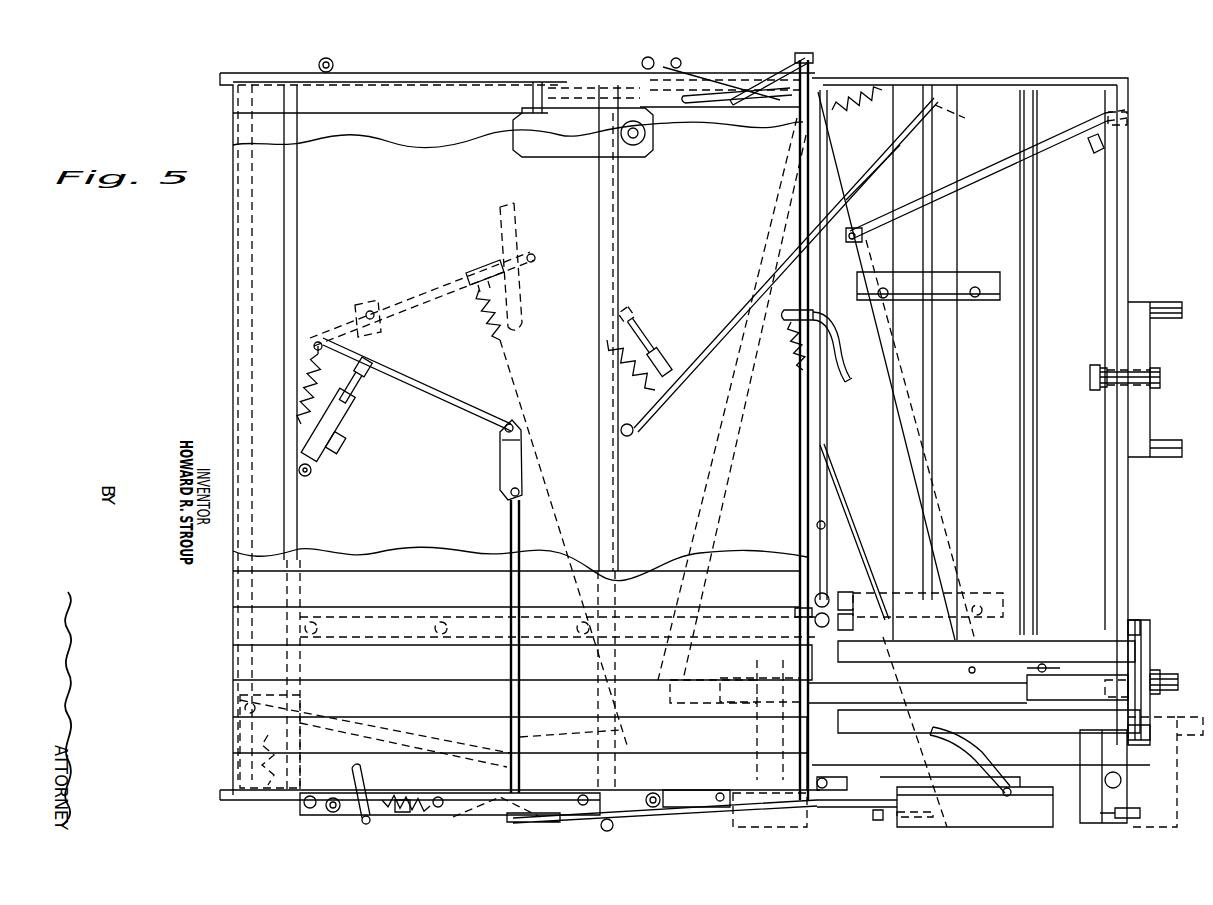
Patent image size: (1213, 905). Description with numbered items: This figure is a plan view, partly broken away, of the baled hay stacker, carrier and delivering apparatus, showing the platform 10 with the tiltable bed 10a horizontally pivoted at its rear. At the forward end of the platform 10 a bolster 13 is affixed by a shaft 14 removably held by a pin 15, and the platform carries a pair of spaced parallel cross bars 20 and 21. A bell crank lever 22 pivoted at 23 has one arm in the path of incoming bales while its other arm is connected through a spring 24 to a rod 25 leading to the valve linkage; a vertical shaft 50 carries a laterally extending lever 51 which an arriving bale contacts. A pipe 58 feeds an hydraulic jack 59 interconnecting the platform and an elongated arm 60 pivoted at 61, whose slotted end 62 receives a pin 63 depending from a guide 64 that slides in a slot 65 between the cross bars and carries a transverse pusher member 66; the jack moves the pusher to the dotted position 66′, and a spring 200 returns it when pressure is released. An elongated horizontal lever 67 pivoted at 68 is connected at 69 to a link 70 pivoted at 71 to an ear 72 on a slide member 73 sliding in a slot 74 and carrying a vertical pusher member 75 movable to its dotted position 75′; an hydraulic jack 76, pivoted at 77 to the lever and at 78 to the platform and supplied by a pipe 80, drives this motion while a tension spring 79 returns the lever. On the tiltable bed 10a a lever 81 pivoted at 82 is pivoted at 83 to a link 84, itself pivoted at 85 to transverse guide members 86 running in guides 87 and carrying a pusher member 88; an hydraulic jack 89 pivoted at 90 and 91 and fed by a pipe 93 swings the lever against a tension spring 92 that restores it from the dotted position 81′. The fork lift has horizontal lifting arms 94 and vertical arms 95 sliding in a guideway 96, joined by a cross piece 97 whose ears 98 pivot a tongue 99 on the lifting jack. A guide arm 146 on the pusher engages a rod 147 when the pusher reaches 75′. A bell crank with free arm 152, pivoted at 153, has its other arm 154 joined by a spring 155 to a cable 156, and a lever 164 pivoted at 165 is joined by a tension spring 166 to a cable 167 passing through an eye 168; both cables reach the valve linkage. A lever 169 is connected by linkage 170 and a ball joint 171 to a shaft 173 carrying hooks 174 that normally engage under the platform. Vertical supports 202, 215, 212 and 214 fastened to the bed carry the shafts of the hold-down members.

The platform 10 is at (1128, 558).
The tiltable bed 10a is at (490, 82).
The bolster 13 is at (1138, 302).
The shaft 14 is at (1155, 370).
The pin 15 is at (1095, 391).
The cross bar 20 is at (900, 478).
The cross bar 21 is at (953, 458).
The bell crank lever 22 is at (849, 373).
The pivot 23 is at (815, 306).
The spring 24 is at (793, 360).
The rod 25 is at (838, 470).
The vertically extending shaft 50 is at (1007, 795).
The laterally extending lever 51 is at (956, 748).
The pipe 58 is at (631, 312).
The hydraulic jack 59 is at (646, 345).
The elongated arm 60 is at (736, 320).
The pivot 61 is at (629, 436).
The slot 62 is at (866, 178).
The pin 63 is at (930, 122).
The guide 64 is at (1000, 362).
The slot 65 is at (932, 382).
The pusher member 66 is at (950, 300).
The dotted line position of pusher member 66′ is at (970, 590).
The elongated horizontal lever 67 is at (732, 440).
The pivot 68 is at (815, 85).
The pivot 69 is at (970, 672).
The link 70 is at (1010, 652).
The pivot 71 is at (1044, 665).
The ear 72 is at (1048, 665).
The horizontal slide member 73 is at (1040, 694).
The slot 74 is at (937, 687).
The vertically extending pusher member 75 is at (1115, 688).
The dotted line position of pusher member 75′ is at (802, 688).
The hydraulic jack 76 is at (1006, 172).
The pivot 77 is at (858, 241).
The pivot 78 is at (1122, 118).
The tension spring 79 is at (852, 106).
The pipe 80 is at (1093, 152).
The lever 81 is at (403, 392).
The dotted line position of lever 81′ is at (408, 282).
The pivot 82 is at (306, 335).
The pivot 83 is at (504, 433).
The link 84 is at (505, 467).
The pivot 85 is at (510, 494).
The transverse guide members 86 is at (510, 530).
The guides 87 is at (510, 547).
The vertically extending pusher member 88 is at (340, 817).
The hydraulic jack 89 is at (345, 427).
The pivot 90 is at (310, 478).
The pivot 91 is at (370, 369).
The tension spring 92 is at (305, 385).
The pipe 93 is at (340, 463).
The horizontal lifting arms 94 is at (867, 717).
The vertical arms 95 is at (1150, 632).
The guideway 96 is at (1133, 623).
The cross piece 97 is at (1150, 648).
The forwardly extending ears 98 is at (1178, 682).
The tongue 99 is at (1160, 673).
The guide arm 146 is at (1088, 801).
The rod 147 is at (862, 812).
The free arm 152 is at (365, 790).
The pivot 153 is at (370, 820).
The arm 154 is at (407, 811).
The spring 155 is at (420, 798).
The cable 156 is at (635, 818).
The lever 164 is at (497, 268).
The pivot 165 is at (533, 258).
The tension spring 166 is at (483, 326).
The cable 167 is at (552, 503).
The eye 168 is at (655, 808).
The lever 169 is at (767, 103).
The linkage 170 is at (792, 68).
The ball joint 171 is at (808, 58).
The shaft 173 is at (698, 437).
The hooks 174 is at (797, 607).
The spring 200 is at (620, 370).
The vertical support 202 is at (308, 807).
The vertical support 212 is at (735, 813).
The vertical support 214 is at (642, 63).
The vertical support 215 is at (334, 64).